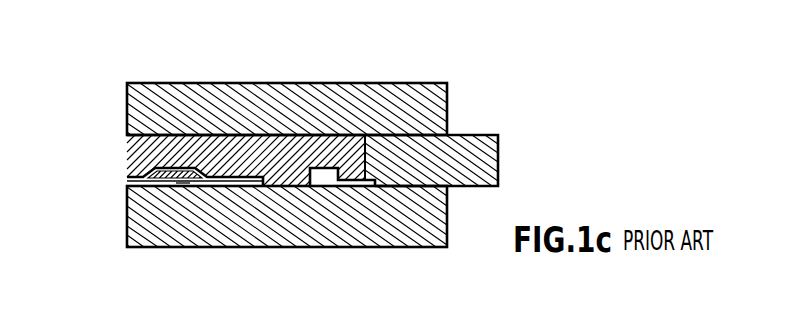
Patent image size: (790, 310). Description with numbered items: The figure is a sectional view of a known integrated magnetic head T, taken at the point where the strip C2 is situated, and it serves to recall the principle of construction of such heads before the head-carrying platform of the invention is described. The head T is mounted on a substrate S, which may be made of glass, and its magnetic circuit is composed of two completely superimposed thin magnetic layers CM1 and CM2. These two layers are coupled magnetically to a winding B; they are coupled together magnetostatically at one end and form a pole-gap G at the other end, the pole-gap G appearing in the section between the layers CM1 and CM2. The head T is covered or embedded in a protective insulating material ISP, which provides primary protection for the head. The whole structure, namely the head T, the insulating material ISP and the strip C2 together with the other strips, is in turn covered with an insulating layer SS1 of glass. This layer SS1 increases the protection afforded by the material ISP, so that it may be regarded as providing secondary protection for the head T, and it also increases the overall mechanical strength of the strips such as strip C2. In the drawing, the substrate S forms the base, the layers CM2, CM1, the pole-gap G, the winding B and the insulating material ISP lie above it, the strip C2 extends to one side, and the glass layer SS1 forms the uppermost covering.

The insulating layer SS1 is at (420, 83).
The integrated magnetic head T is at (127, 232).
The strip C2 is at (492, 135).
The thin magnetic layer CM1 is at (127, 170).
The protective insulating material ISP is at (127, 146).
The pole-gap G is at (127, 179).
The thin magnetic layer CM2 is at (127, 190).
The substrate S is at (323, 247).
The winding B is at (182, 183).